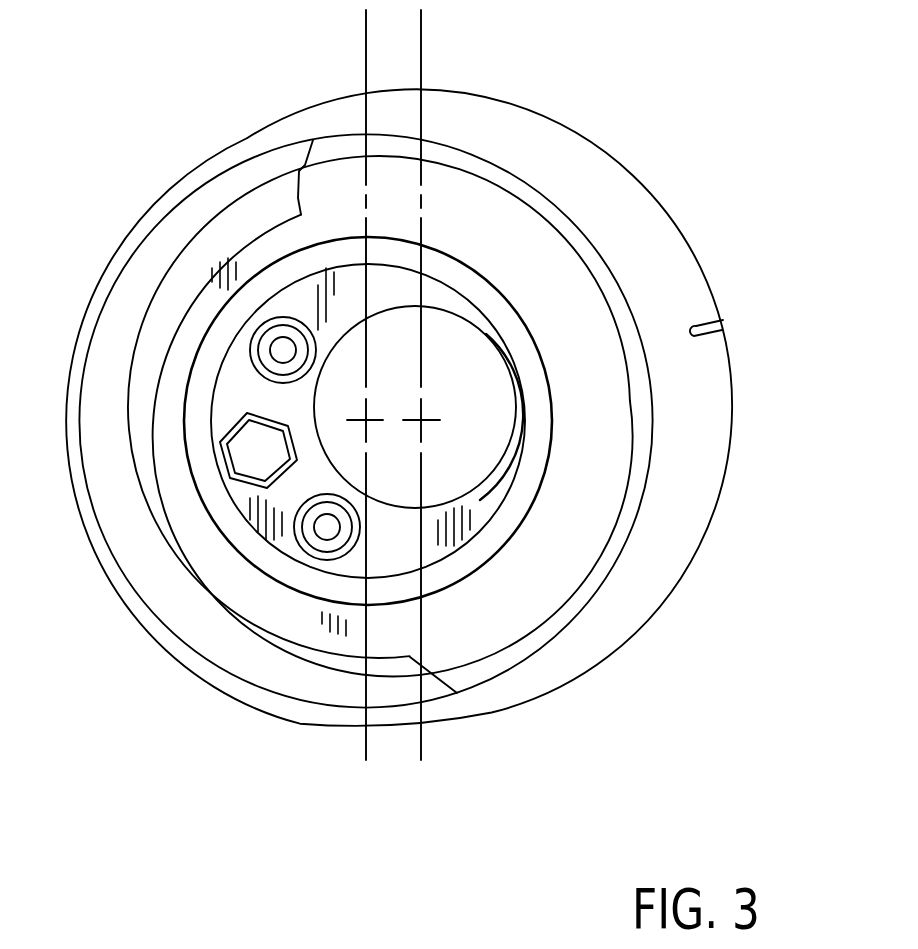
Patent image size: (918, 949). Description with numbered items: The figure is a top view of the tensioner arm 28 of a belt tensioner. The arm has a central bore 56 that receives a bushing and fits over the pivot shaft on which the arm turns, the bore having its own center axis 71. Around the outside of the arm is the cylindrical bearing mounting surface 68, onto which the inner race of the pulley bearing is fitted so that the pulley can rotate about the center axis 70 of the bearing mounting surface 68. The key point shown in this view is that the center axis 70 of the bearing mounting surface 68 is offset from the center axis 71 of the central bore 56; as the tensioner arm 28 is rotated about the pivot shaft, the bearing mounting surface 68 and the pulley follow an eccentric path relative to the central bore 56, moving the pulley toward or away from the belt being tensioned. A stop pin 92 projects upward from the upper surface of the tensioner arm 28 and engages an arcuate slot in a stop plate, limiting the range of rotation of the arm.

The tensioner arm 28 is at (168, 655).
The central bore 56 is at (497, 337).
The bearing mounting surface 68 is at (283, 280).
The center axis 70 is at (365, 418).
The center axis 71 is at (421, 425).
The stop pin 92 is at (245, 457).